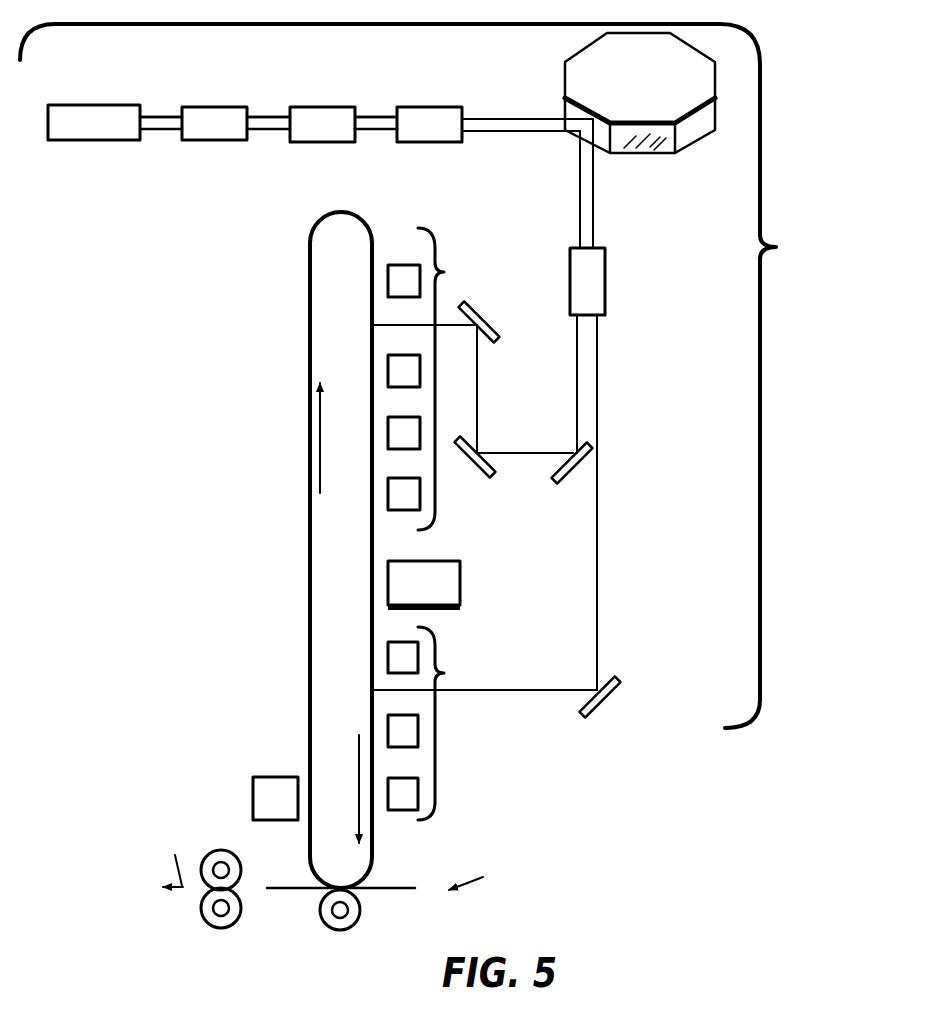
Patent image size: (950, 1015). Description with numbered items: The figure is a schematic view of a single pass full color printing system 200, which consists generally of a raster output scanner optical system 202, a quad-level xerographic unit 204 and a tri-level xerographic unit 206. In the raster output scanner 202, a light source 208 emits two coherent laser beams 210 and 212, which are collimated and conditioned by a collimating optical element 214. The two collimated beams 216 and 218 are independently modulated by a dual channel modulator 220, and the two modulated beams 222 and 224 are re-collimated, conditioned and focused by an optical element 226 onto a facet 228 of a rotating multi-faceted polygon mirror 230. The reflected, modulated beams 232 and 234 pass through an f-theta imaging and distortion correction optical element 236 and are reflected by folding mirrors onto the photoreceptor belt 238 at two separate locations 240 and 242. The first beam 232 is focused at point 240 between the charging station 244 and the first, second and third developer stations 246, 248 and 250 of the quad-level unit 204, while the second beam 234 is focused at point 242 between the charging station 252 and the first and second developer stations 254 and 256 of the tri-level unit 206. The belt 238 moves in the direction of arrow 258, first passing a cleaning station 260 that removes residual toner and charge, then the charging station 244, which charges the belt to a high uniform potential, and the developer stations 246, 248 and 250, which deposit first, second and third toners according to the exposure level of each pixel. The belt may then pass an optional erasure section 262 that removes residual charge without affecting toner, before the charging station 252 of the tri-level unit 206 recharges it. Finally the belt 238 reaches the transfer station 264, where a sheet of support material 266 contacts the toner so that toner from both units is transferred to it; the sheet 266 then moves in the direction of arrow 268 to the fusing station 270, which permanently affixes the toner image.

The single pass full color printing system 200 is at (805, 67).
The raster output scanner optical system 202 is at (773, 396).
The quad-level xerographic unit 204 is at (452, 379).
The tri-level xerographic unit 206 is at (452, 723).
The light source 208 is at (95, 110).
The coherent laser beam 210 is at (163, 116).
The coherent laser beam 212 is at (162, 130).
The collimating optical element 214 is at (217, 115).
The collimated beam 216 is at (270, 115).
The collimated beam 218 is at (265, 131).
The dual channel modulator 220 is at (317, 110).
The modulated beam 222 is at (377, 115).
The modulated beam 224 is at (380, 132).
The optical element 226 is at (430, 113).
The facet 228 is at (575, 128).
The rotating multi-faceted polygon mirror 230 is at (693, 127).
The first reflected modulated beam 232 is at (579, 211).
The second reflected modulated beam 234 is at (594, 211).
The f-theta imaging and distortion correction optical element 236 is at (585, 280).
The photoreceptor belt 238 is at (318, 225).
The first exposure point 240 is at (459, 392).
The second exposure point 242 is at (473, 696).
The charging station 244 is at (410, 275).
The first developer station 246 is at (405, 374).
The second developer station 248 is at (420, 431).
The third developer station 250 is at (410, 501).
The charging station 252 is at (410, 650).
The first developer station 254 is at (412, 740).
The second developer station 256 is at (408, 792).
The arrow 258 is at (320, 447).
The cleaning station 260 is at (263, 795).
The erasure section 262 is at (448, 585).
The transfer station 264 is at (350, 915).
The sheet of support material 266 is at (397, 887).
The arrow 268 is at (335, 861).
The fusing station 270 is at (246, 932).